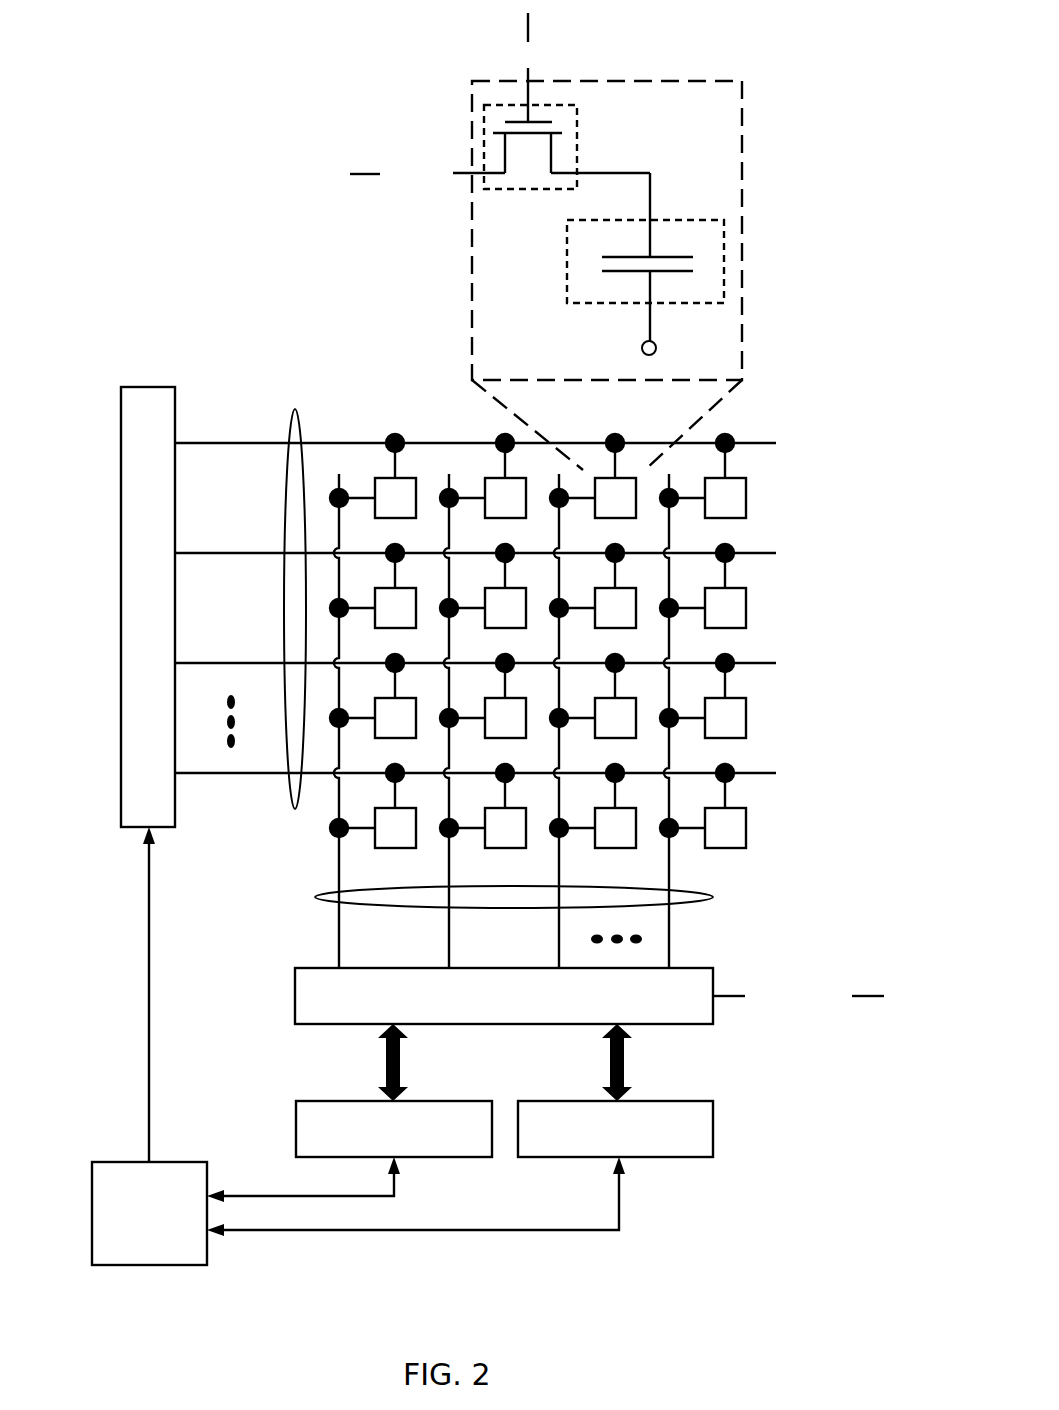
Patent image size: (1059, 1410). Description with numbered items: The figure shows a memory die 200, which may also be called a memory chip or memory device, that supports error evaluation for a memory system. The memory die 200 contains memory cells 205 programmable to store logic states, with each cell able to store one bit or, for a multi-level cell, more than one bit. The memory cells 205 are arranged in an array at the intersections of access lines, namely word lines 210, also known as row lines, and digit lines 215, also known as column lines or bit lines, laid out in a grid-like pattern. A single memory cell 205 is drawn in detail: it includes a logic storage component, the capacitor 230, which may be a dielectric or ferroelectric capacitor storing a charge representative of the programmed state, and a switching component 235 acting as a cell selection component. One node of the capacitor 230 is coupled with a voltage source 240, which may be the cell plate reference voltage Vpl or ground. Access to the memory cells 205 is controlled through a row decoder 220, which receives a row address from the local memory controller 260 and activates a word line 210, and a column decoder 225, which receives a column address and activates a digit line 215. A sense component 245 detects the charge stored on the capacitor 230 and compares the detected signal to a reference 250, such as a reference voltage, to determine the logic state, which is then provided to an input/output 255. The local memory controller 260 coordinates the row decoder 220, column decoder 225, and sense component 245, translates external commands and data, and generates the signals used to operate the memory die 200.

The memory die 200 is at (729, 1291).
The memory cell 205 is at (688, 81).
The word line 210 is at (528, 22).
The digit line 215 is at (713, 897).
The row decoder 220 is at (121, 745).
The column decoder 225 is at (413, 1090).
The capacitor 230 is at (567, 273).
The switching component 235 is at (577, 147).
The voltage source 240 is at (656, 348).
The sense component 245 is at (340, 1024).
The reference 250 is at (872, 996).
The input/output 255 is at (660, 1090).
The local memory controller 260 is at (143, 1265).